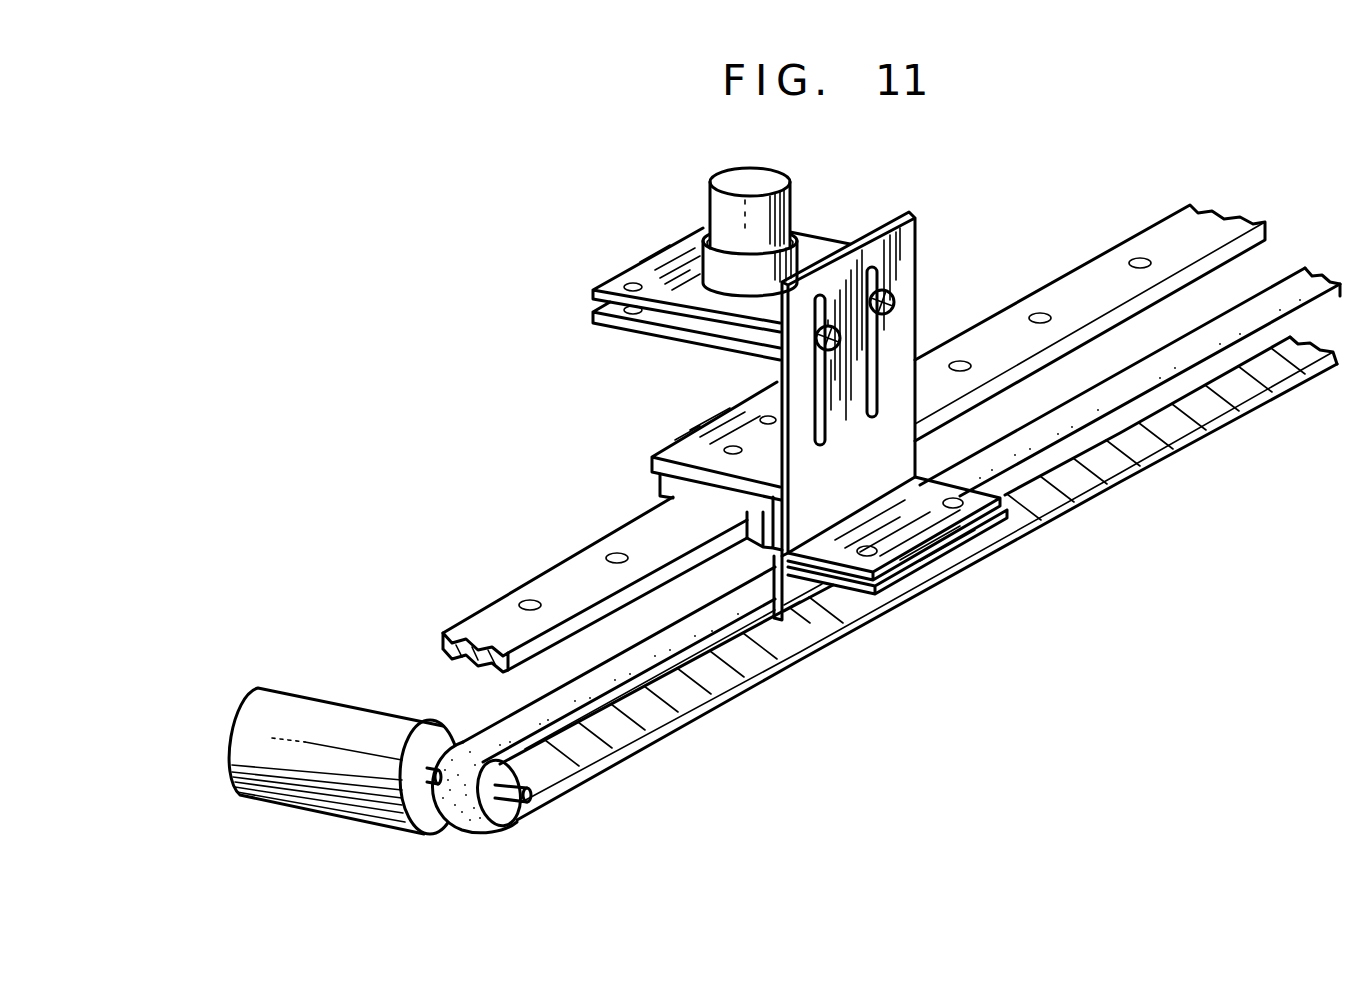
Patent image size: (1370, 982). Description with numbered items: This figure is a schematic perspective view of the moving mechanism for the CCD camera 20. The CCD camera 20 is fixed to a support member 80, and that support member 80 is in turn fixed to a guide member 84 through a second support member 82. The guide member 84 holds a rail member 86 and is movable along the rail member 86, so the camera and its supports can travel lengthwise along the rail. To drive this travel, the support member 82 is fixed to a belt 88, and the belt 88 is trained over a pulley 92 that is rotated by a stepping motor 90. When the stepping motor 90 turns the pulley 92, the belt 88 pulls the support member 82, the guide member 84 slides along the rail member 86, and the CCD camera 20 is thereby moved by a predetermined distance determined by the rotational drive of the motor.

The CCD camera 20 is at (791, 203).
The support member 80 is at (657, 265).
The support member 82 is at (902, 265).
The guide member 84 is at (667, 492).
The rail member 86 is at (1088, 280).
The belt 88 is at (1087, 478).
The stepping motor 90 is at (332, 710).
The pulley 92 is at (494, 808).